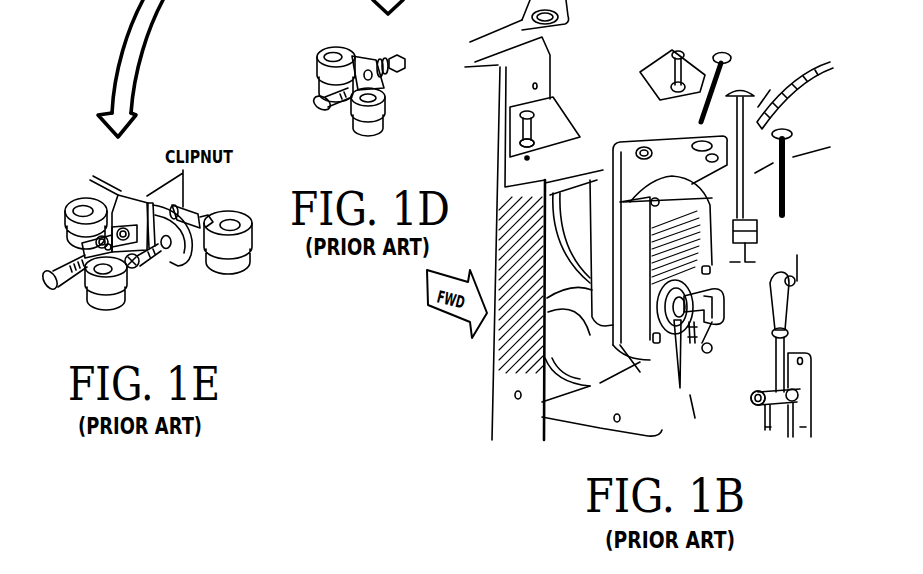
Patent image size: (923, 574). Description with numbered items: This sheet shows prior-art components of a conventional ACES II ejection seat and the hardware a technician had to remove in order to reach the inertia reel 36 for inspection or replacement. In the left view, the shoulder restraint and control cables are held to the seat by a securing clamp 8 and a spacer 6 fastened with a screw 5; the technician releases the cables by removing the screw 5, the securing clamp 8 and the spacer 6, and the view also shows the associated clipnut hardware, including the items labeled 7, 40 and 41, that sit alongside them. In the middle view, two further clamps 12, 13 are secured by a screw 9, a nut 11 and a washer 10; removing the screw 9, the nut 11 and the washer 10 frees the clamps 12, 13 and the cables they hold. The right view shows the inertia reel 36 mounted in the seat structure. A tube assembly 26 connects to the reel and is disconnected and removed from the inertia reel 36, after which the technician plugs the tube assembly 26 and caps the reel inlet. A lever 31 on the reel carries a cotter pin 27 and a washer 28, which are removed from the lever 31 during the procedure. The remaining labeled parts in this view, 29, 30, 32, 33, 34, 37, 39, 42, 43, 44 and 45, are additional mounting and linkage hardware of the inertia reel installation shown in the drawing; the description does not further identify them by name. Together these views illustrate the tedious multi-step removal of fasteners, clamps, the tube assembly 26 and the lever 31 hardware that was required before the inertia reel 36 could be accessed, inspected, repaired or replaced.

In FIG. 1E, the screw 5 is at (57, 266).
In FIG. 1E, the spacer 6 is at (112, 228).
In FIG. 1E, the grommet 7 is at (72, 200).
In FIG. 1E, the securing clamp 8 is at (115, 297).
In FIG. 1D, the screw 9 is at (319, 112).
In FIG. 1D, the washer 10 is at (384, 82).
In FIG. 1D, the nut 11 is at (403, 50).
In FIG. 1D, the clamp 12 is at (316, 55).
In FIG. 1D, the clamp 13 is at (369, 130).
In FIG. 1B, the tube assembly 26 is at (750, 200).
In FIG. 1B, the cotter pin 27 is at (800, 273).
In FIG. 1B, the washer 28 is at (788, 260).
In FIG. 1B, the lever 29 is at (787, 308).
In FIG. 1B, the plate 30 is at (803, 373).
In FIG. 1B, the lever 31 is at (725, 333).
In FIG. 1B, the bolt 32 is at (533, 128).
In FIG. 1B, the bolt 33 is at (673, 57).
In FIG. 1B, the washer 34 is at (540, 143).
In FIG. 1B, the inertia reel 36 is at (645, 152).
In FIG. 1B, the nut 37 is at (790, 332).
In FIG. 1B, the clamp 39 is at (760, 400).
In FIG. 1E, the screw 40 is at (157, 252).
In FIG. 1E, the grommet 41 is at (237, 263).
In FIG. 1B, the clip 42 is at (705, 265).
In FIG. 1B, the pin 43 is at (679, 388).
In FIG. 1B, the housing 44 is at (640, 358).
In FIG. 1B, the line 45 is at (700, 418).